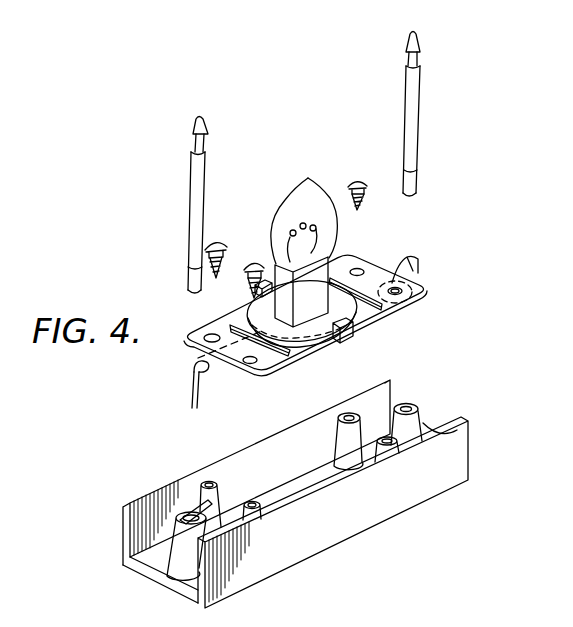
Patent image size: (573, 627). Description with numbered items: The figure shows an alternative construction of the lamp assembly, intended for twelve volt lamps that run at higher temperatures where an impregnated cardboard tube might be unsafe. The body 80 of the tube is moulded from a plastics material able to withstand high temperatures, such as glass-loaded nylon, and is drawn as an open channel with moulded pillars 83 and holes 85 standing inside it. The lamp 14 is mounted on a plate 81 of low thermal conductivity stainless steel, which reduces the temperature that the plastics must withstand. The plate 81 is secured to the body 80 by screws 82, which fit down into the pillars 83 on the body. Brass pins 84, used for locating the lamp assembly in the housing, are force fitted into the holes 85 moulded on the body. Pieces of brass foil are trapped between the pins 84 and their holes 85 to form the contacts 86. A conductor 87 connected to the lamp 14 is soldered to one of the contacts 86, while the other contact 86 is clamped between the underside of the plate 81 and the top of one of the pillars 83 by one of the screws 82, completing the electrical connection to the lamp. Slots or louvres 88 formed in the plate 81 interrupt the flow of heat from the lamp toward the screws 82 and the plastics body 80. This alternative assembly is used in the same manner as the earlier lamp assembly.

The lamp 14 is at (295, 198).
The body 80 is at (450, 468).
The plate 81 is at (428, 286).
The screws 82 is at (252, 262).
The pillars 83 is at (214, 506).
The brass pins 84 is at (200, 176).
The holes 85 is at (183, 516).
The contacts 86 is at (390, 272).
The conductor 87 is at (209, 368).
The slots or louvres 88 is at (385, 318).